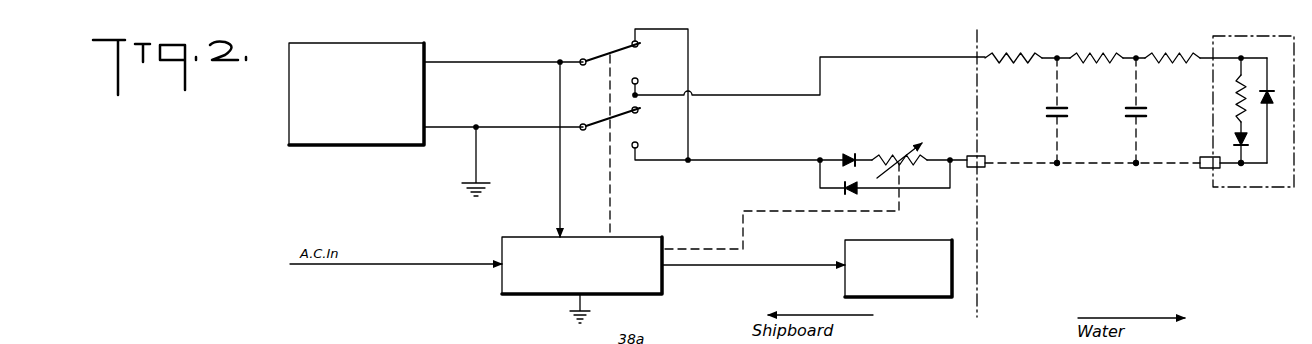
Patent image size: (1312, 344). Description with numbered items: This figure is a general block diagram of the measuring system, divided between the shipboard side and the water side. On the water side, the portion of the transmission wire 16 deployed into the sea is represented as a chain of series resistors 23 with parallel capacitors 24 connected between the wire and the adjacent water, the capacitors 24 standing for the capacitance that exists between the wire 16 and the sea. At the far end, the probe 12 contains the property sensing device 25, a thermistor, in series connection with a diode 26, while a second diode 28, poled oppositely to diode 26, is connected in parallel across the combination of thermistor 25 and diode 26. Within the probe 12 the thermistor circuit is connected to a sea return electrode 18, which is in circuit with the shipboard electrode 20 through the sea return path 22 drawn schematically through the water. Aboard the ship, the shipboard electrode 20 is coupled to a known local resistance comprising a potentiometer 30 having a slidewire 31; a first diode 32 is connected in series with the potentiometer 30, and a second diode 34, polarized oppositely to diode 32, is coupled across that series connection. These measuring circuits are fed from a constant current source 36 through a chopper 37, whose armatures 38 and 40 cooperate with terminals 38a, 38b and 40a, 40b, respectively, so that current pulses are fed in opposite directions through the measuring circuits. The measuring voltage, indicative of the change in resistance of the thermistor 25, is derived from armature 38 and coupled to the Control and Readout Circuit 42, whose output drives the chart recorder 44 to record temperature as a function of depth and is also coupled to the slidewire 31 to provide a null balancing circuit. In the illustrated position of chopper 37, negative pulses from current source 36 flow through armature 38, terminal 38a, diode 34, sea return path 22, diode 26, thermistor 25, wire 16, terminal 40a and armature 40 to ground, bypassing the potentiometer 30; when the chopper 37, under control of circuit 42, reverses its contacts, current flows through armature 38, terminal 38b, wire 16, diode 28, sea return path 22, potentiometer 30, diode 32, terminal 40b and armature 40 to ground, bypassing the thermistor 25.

The probe 12 is at (1266, 37).
The transmission wire 16 is at (983, 56).
The sea return electrode 18 is at (1203, 157).
The shipboard electrode 20 is at (986, 156).
The sea return path 22 is at (1112, 166).
The resistors 23 is at (1016, 52).
The capacitors 24 is at (1045, 107).
The property sensing device 25 is at (1237, 89).
The diode 26 is at (1244, 144).
The second diode 28 is at (1270, 90).
The potentiometer 30 is at (898, 158).
The slidewire 31 is at (923, 141).
The first diode 32 is at (848, 156).
The second diode 34 is at (843, 190).
The constant current source 36 is at (430, 44).
The chopper 37 is at (667, 27).
The armature 38 is at (588, 58).
The terminal 38a is at (632, 43).
The terminal 38b is at (650, 71).
The armature 40 is at (602, 123).
The terminal 40a is at (660, 111).
The terminal 40b is at (641, 140).
The Control and Readout Circuit 42 is at (538, 296).
The chart recorder 44 is at (847, 288).